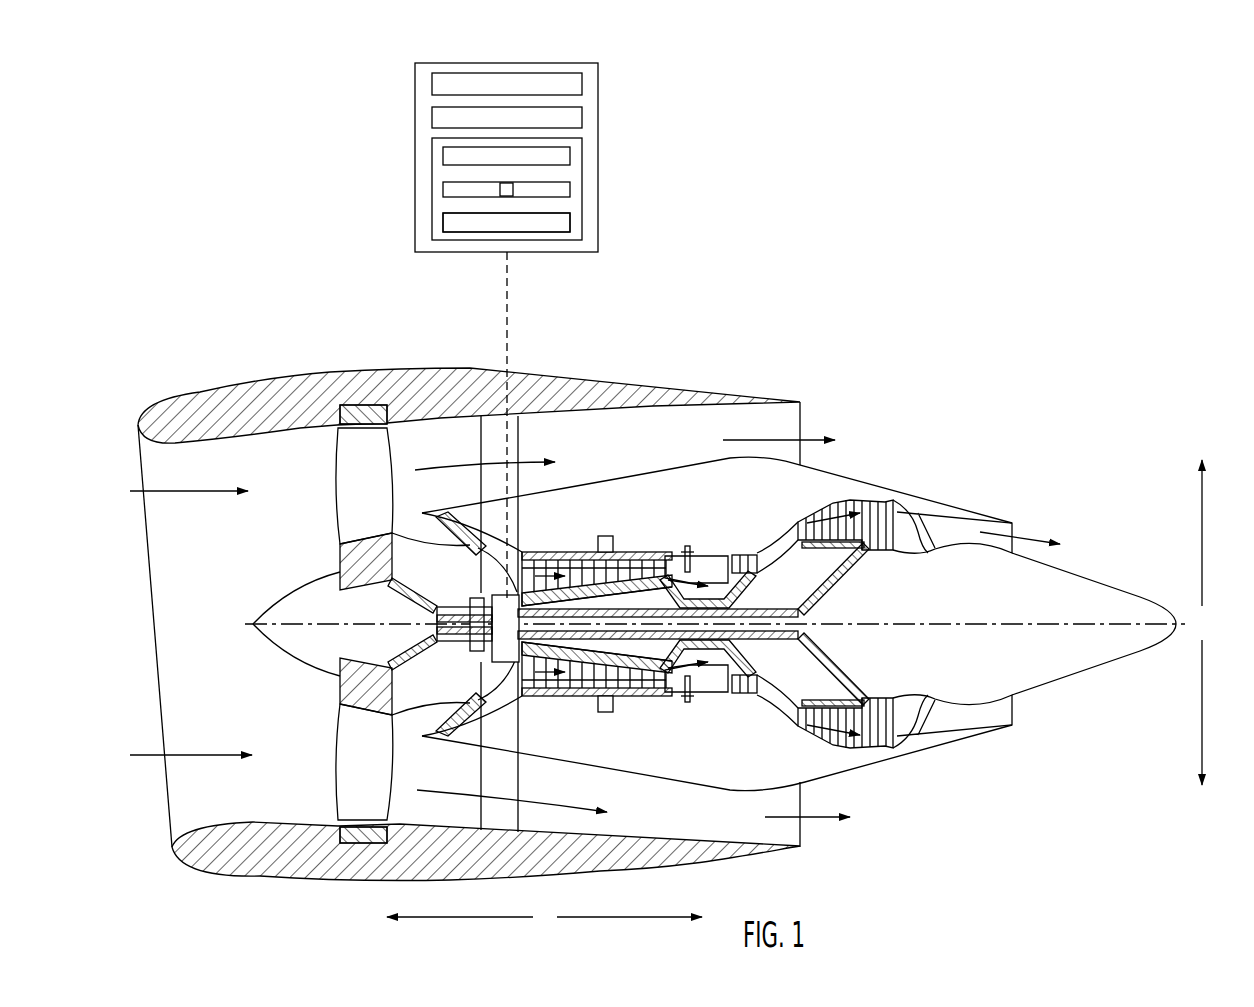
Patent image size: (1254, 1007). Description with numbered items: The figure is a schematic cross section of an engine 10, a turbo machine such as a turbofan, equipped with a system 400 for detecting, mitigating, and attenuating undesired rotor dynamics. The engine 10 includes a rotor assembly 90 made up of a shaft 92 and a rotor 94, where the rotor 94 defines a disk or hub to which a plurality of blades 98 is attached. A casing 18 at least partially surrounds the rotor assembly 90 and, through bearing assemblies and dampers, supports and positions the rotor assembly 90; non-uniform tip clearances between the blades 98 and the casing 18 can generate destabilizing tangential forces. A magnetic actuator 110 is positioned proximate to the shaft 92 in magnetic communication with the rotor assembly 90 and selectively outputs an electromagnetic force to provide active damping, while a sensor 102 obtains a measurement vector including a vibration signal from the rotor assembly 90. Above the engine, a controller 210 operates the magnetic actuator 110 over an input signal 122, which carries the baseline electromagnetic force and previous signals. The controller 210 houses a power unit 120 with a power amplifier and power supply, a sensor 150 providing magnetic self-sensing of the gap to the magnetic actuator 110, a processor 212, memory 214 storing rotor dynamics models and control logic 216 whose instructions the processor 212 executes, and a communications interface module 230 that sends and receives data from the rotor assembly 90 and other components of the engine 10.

The engine 10 is at (933, 388).
The casing 18 is at (723, 462).
The rotor assembly 90 is at (446, 592).
The shaft 92 is at (425, 604).
The rotor 94 is at (323, 577).
The blades 98 is at (338, 474).
The sensor 102 is at (613, 541).
The magnetic actuator 110 is at (688, 547).
The power unit 120 is at (582, 80).
The input signal 122 is at (507, 300).
The sensor 150 is at (582, 112).
The controller 210 is at (582, 188).
The processor 212 is at (443, 152).
The memory 214 is at (443, 213).
The control logic 216 is at (500, 189).
The communications interface module 230 is at (582, 226).
The system 400 is at (543, 63).